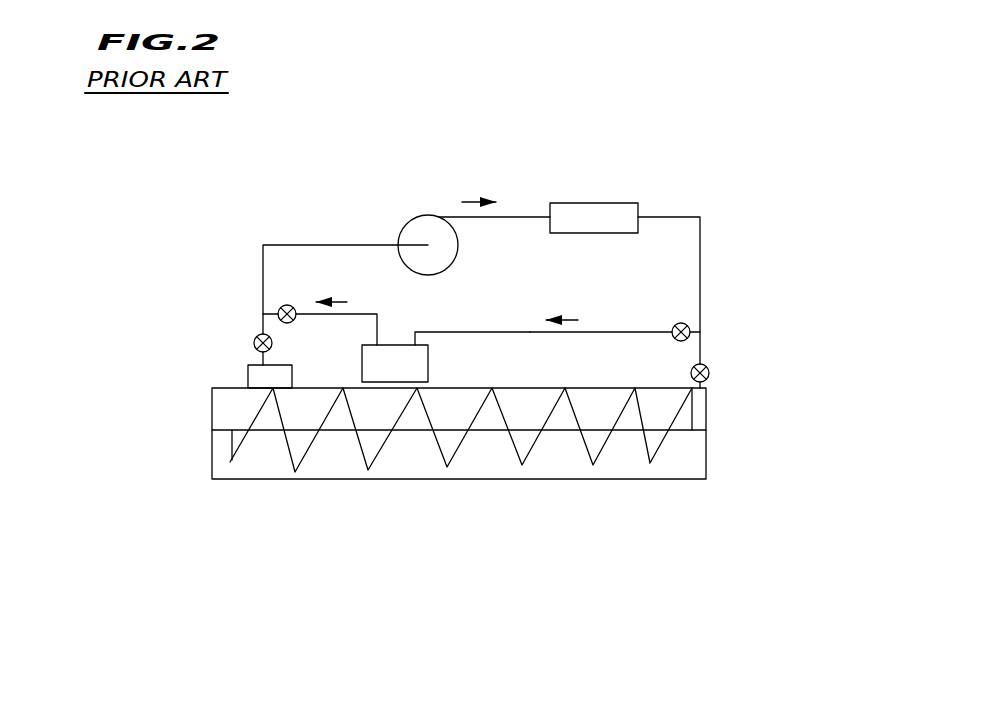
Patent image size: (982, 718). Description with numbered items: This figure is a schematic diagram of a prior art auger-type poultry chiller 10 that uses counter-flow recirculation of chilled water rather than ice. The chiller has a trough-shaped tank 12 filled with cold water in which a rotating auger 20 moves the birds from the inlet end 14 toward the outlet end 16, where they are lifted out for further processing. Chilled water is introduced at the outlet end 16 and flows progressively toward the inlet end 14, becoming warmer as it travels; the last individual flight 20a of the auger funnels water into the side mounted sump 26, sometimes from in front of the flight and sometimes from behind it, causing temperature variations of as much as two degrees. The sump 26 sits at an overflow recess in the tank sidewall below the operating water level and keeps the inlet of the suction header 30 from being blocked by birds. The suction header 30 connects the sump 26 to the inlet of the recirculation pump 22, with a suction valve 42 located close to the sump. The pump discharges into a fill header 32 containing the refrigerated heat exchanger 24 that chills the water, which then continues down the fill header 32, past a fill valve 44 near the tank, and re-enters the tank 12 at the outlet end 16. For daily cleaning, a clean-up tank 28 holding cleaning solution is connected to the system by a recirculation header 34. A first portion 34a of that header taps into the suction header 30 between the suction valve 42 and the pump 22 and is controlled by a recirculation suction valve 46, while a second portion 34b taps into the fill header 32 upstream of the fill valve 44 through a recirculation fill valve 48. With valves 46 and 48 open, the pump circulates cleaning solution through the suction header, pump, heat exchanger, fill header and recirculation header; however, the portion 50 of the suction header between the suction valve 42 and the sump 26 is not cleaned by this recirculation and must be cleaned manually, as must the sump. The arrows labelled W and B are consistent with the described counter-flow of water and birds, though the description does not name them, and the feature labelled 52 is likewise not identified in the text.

The poultry chiller 10 is at (193, 517).
The tank 12 is at (593, 481).
The inlet end 14 is at (188, 432).
The outlet end 16 is at (763, 420).
The auger 20 is at (383, 448).
The individual flight 20a is at (250, 445).
The recirculation pump 22 is at (423, 228).
The heat exchanger 24 is at (608, 212).
The sump 26 is at (248, 378).
The clean-up tank 28 is at (428, 372).
The suction header 30 is at (292, 243).
The fill header 32 is at (702, 275).
The recirculation header 34 is at (613, 330).
The first portion of recirculation header 34a is at (381, 323).
The second portion of recirculation header 34b is at (489, 330).
The suction valve 42 is at (255, 336).
The fill valve 44 is at (710, 371).
The recirculation suction valve 46 is at (281, 306).
The recirculation fill valve 48 is at (679, 324).
The portion of suction header 50 is at (266, 358).
The flow path 52 is at (360, 313).
The water flow direction W is at (513, 398).
The bath flow direction B is at (496, 467).